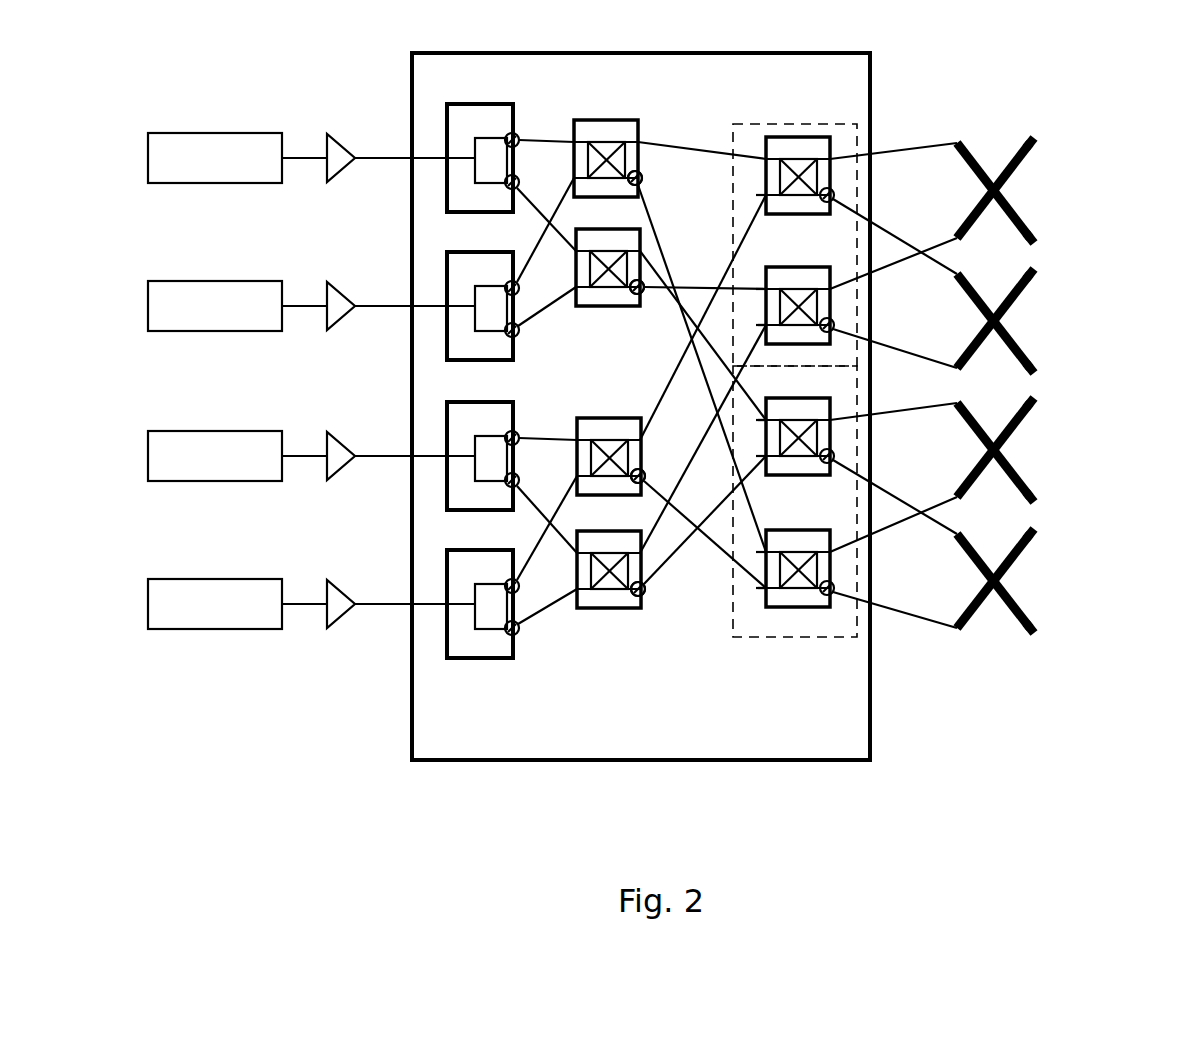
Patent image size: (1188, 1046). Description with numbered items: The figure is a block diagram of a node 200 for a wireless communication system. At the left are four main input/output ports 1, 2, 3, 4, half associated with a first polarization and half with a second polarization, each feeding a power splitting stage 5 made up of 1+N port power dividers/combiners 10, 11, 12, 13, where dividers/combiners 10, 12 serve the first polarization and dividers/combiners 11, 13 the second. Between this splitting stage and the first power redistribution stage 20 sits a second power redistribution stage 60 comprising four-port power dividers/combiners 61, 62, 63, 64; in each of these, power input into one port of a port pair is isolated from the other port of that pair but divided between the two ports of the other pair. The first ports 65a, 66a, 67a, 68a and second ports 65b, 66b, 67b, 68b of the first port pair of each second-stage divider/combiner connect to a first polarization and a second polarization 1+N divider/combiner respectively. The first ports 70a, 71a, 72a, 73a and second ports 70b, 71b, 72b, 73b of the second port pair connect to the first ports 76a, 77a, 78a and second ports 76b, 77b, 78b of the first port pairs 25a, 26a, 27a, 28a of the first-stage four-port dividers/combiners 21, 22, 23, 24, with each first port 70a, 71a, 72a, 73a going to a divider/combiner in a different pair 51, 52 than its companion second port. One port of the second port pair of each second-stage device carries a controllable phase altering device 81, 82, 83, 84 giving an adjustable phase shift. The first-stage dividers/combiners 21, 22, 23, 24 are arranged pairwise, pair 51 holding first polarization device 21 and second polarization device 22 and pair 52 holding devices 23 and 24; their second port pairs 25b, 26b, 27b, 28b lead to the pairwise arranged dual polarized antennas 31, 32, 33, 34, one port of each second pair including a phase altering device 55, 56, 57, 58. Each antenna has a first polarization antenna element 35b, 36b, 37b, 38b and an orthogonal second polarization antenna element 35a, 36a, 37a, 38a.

The node 200 is at (343, 55).
The main input/output port 1 is at (207, 133).
The main input/output port 2 is at (207, 282).
The main input/output port 3 is at (207, 430).
The main input/output port 4 is at (207, 578).
The power splitting stage 5 is at (473, 694).
The 1+N port power divider/combiner 10 is at (468, 102).
The 1+N port power divider/combiner 11 is at (468, 252).
The 1+N port power divider/combiner 12 is at (468, 400).
The 1+N port power divider/combiner 13 is at (468, 548).
The first power redistribution stage 20 is at (783, 692).
The four-port power divider/combiner 21 is at (790, 137).
The four-port power divider/combiner 22 is at (810, 267).
The four-port power divider/combiner 23 is at (832, 400).
The four-port power divider/combiner 24 is at (832, 531).
The first port pair 25a is at (766, 195).
The second port pair 25b is at (832, 172).
The first port pair 26a is at (766, 325).
The second port pair 26b is at (832, 306).
The first port pair 27a is at (735, 440).
The second port pair 27b is at (832, 440).
The first port pair 28a is at (766, 590).
The second port pair 28b is at (832, 562).
The dual polarized antenna 31 is at (1053, 188).
The dual polarized antenna 32 is at (1053, 320).
The dual polarized antenna 33 is at (1053, 448).
The dual polarized antenna 34 is at (1060, 580).
The second polarization antenna element 35a is at (1032, 143).
The first polarization antenna element 35b is at (1032, 238).
The second polarization antenna element 36a is at (1032, 274).
The first polarization antenna element 36b is at (1032, 368).
The second polarization antenna element 37a is at (1032, 403).
The first polarization antenna element 37b is at (1032, 497).
The second polarization antenna element 38a is at (1032, 534).
The first polarization antenna element 38b is at (1032, 628).
The pair of power dividers/combiners 51 is at (829, 124).
The pair of power dividers/combiners 52 is at (835, 637).
The phase altering device 55 is at (835, 193).
The phase altering device 56 is at (837, 323).
The phase altering device 57 is at (835, 458).
The phase altering device 58 is at (835, 588).
The second power redistribution stage 60 is at (603, 682).
The four-port power divider/combiner 61 is at (578, 120).
The four-port power divider/combiner 62 is at (585, 306).
The four-port power divider/combiner 63 is at (602, 418).
The four-port power divider/combiner 64 is at (592, 608).
The first port of first port pair 65a is at (539, 129).
The second port of first port pair 65b is at (540, 202).
The first port of first port pair 66a is at (535, 236).
The second port of first port pair 66b is at (540, 303).
The first port of first port pair 67a is at (541, 424).
The second port of first port pair 67b is at (541, 500).
The first port of first port pair 68a is at (541, 534).
The second port of first port pair 68b is at (541, 618).
The first port of second port pair 70a is at (750, 155).
The second port of second port pair 70b is at (697, 355).
The first port of second port pair 71a is at (648, 252).
The second port of second port pair 71b is at (646, 292).
The first port of second port pair 72a is at (648, 436).
The second port of second port pair 72b is at (645, 480).
The first port of second port pair 73a is at (648, 553).
The second port of second port pair 73b is at (650, 590).
The first port of first port pair 76a is at (747, 282).
The second port of first port pair 76b is at (690, 352).
The first port of first port pair 77a is at (757, 400).
The second port of first port pair 77b is at (760, 478).
The first port of first port pair 78a is at (770, 535).
The second port of first port pair 78b is at (765, 590).
The controllable phase altering device 81 is at (646, 182).
The controllable phase altering device 82 is at (650, 280).
The controllable phase altering device 83 is at (648, 462).
The controllable phase altering device 84 is at (648, 594).